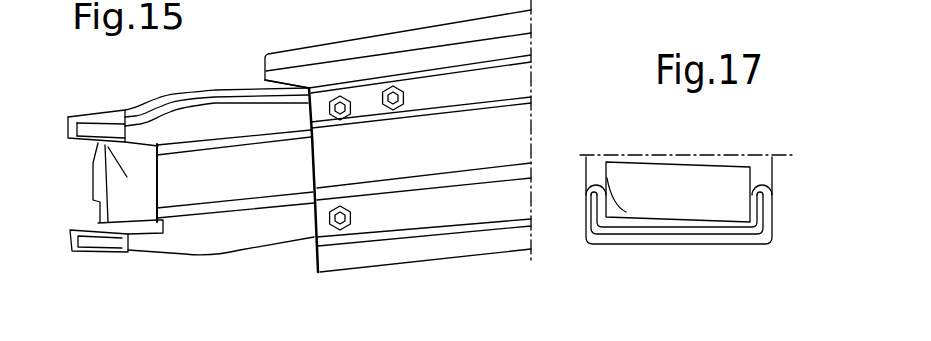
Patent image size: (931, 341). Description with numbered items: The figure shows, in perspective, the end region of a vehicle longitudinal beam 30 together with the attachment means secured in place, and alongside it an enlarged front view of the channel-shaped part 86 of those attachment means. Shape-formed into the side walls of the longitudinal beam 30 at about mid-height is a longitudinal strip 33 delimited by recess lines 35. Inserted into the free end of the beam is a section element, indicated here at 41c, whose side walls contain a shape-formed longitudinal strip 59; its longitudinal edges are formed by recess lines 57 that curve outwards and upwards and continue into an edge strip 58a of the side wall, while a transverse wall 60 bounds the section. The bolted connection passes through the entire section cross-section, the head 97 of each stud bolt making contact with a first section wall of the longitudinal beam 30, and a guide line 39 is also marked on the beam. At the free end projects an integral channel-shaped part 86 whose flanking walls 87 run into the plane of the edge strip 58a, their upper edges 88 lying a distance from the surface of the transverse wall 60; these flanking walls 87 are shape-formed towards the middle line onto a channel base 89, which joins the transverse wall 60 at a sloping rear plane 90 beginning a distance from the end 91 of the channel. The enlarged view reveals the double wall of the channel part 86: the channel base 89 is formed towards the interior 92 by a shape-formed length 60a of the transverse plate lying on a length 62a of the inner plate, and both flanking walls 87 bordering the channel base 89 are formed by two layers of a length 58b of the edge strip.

In FIG. 15, the longitudinal beam 30 is at (542, 86).
In FIG. 15, the longitudinal strip 33 is at (417, 160).
In FIG. 15, the recess line 35 is at (430, 43).
In FIG. 15, the guide groove 39 is at (520, 175).
In FIG. 15, the fastening section 41c is at (242, 75).
In FIG. 15, the recess line 57 is at (256, 205).
In FIG. 15, the edge strip 58a is at (202, 123).
In FIG. 17, the length of edge strip 58b is at (753, 246).
In FIG. 15, the longitudinal strip 59 is at (213, 182).
In FIG. 15, the transverse wall 60 is at (188, 98).
In FIG. 17, the shape-formed length of transverse plate 60a is at (669, 227).
In FIG. 17, the length of inner plate 62a is at (650, 242).
In FIG. 15, the channel-shaped part 86 is at (62, 112).
In FIG. 17, the channel-shaped part 86 is at (665, 254).
In FIG. 15, the flanking wall 87 is at (98, 245).
In FIG. 17, the flanking wall 87 is at (577, 224).
In FIG. 15, the upper edge 88 is at (86, 118).
In FIG. 17, the upper edge 88 is at (762, 175).
In FIG. 15, the channel base 89 is at (106, 222).
In FIG. 17, the channel base 89 is at (643, 206).
In FIG. 15, the rear plane 90 is at (151, 105).
In FIG. 17, the rear plane 90 is at (703, 203).
In FIG. 17, the end of channel 91 is at (725, 246).
In FIG. 17, the interior 92 is at (584, 178).
In FIG. 15, the bolt head 97 is at (395, 87).